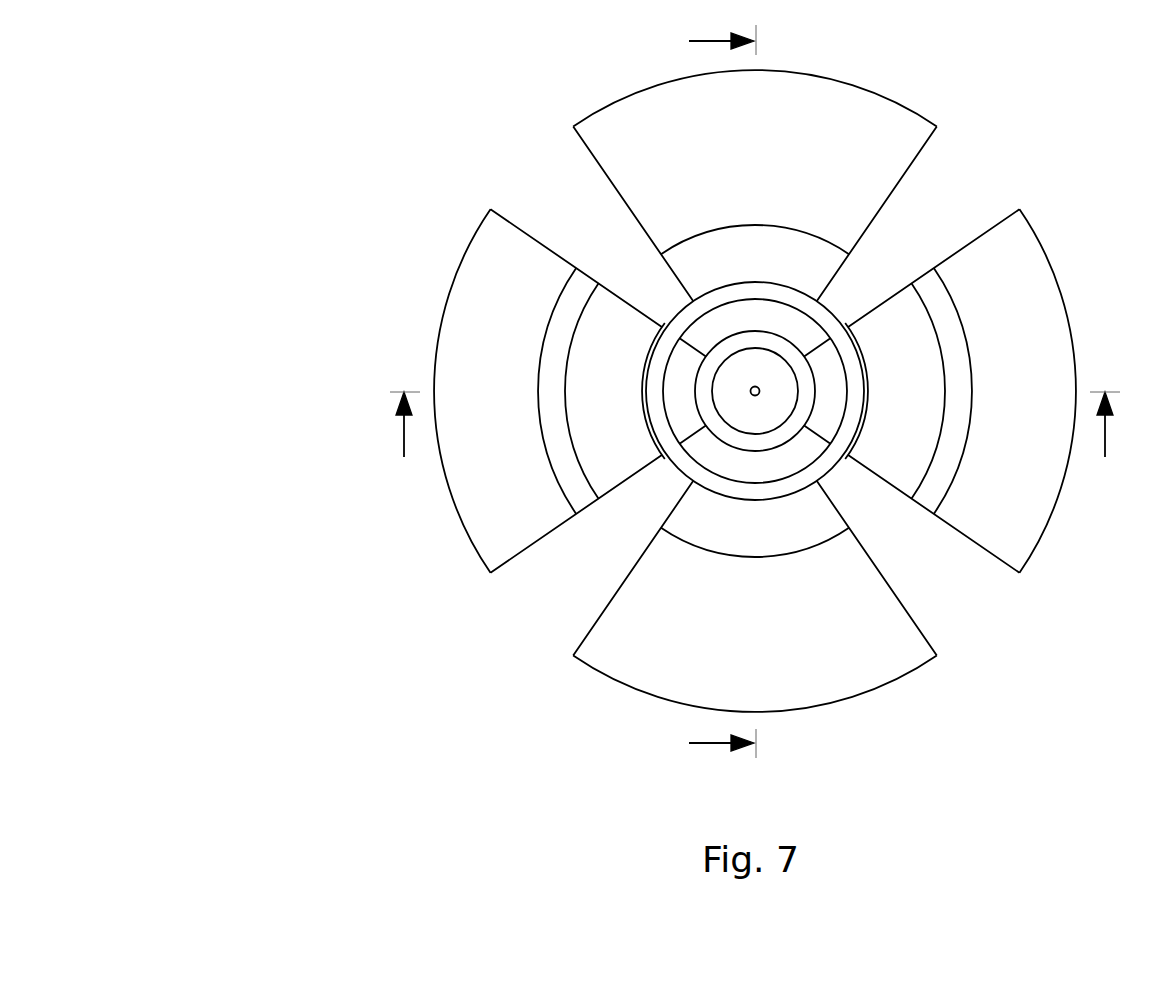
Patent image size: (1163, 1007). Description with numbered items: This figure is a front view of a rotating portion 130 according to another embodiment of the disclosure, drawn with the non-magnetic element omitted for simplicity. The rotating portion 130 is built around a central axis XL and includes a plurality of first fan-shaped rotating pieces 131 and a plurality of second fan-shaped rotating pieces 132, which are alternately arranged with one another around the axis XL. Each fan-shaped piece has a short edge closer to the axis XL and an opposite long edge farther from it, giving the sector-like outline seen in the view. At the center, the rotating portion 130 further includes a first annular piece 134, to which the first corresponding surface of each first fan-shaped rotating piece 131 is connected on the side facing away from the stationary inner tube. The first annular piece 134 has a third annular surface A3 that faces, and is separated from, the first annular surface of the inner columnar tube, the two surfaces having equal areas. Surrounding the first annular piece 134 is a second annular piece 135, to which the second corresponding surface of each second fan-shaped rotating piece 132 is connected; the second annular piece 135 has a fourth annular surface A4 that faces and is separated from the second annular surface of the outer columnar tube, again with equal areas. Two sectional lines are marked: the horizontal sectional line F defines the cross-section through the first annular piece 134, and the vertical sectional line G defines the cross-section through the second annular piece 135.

The rotating portion 130 is at (262, 597).
The first fan-shaped rotating piece 131 is at (1037, 322).
The second fan-shaped rotating piece 132 is at (883, 660).
The first annular piece 134 is at (772, 342).
The second annular piece 135 is at (717, 483).
The axis XL is at (750, 393).
The third annular surface A3 is at (797, 357).
The fourth annular surface A4 is at (690, 482).
The sectional line F- F is at (755, 442).
The sectional line G- G is at (709, 392).